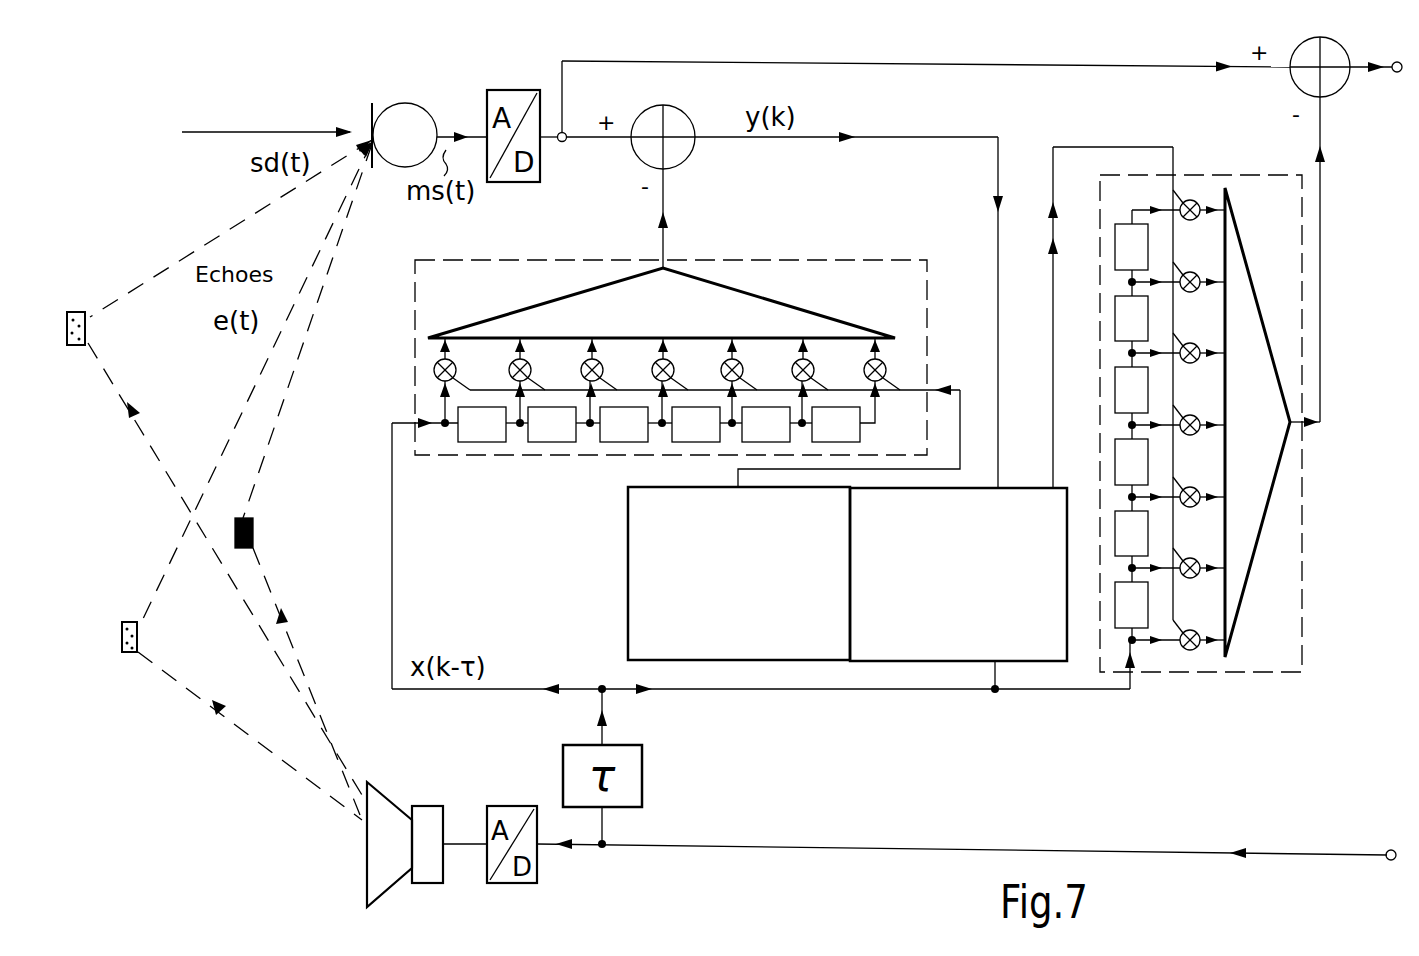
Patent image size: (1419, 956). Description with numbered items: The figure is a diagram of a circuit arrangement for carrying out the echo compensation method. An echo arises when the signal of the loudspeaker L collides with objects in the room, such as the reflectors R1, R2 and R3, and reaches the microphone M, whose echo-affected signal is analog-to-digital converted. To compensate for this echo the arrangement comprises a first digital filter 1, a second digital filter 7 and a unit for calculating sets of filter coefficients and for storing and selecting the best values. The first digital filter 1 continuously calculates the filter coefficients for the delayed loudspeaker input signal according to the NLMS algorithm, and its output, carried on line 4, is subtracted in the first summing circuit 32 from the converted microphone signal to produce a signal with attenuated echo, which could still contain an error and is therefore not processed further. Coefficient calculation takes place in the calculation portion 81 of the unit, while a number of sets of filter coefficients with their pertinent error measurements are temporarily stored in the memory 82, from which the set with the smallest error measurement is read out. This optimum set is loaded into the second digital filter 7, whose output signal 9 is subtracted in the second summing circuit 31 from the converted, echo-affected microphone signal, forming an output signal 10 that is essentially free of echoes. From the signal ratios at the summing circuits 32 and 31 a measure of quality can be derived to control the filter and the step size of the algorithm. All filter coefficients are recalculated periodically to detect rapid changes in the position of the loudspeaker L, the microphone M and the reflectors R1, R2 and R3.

The microphone M is at (405, 103).
The loudspeaker L is at (396, 792).
The reflector R1 is at (253, 526).
The reflector R2 is at (138, 637).
The reflector R3 is at (86, 327).
The first digital filter 1 is at (816, 258).
The filter output signal line 4 is at (652, 222).
The second digital filter 7 is at (1302, 518).
The output signal 9 is at (1324, 165).
The output signal 10 is at (1361, 77).
The second summing circuit 31 is at (1290, 84).
The first summing circuit 32 is at (689, 158).
The continuous calculation of filter coefficients unit 81 is at (628, 561).
The memory 82 is at (1028, 488).